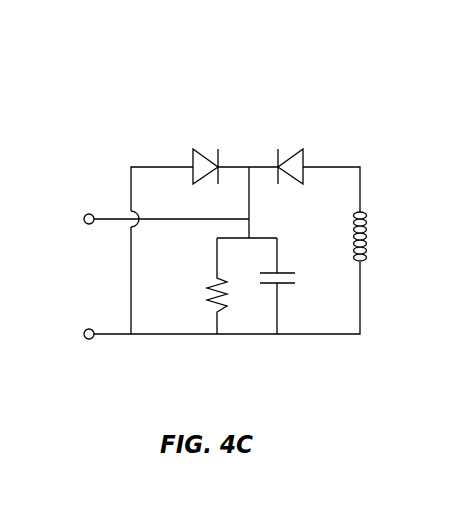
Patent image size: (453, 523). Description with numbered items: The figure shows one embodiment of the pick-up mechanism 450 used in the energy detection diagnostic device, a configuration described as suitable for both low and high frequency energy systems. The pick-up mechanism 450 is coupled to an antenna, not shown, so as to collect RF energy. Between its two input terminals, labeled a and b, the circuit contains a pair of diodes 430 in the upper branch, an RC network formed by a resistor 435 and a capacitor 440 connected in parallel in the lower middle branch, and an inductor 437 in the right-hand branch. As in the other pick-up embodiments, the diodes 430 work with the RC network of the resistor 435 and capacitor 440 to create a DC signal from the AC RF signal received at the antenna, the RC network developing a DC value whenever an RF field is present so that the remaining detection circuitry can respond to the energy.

The pick-up mechanism 450 is at (173, 116).
The diode 430 is at (196, 149).
The resistor of RC network 435 is at (208, 313).
The inductor 437 is at (366, 229).
The capacitor of RC network 440 is at (285, 272).